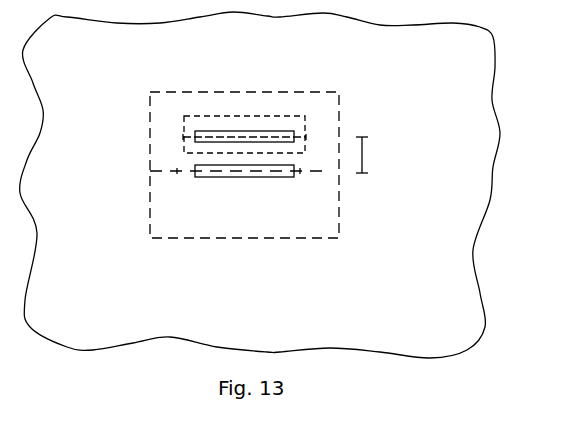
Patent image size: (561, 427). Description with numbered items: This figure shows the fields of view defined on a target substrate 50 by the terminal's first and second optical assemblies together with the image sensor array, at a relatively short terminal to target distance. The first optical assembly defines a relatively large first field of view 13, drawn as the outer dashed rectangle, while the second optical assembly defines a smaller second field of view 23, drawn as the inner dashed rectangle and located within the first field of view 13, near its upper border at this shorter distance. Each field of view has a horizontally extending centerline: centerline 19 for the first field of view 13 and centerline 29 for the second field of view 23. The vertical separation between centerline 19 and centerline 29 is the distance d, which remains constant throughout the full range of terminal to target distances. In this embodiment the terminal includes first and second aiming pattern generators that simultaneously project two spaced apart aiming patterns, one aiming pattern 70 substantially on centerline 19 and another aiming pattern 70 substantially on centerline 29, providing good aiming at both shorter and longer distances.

The first field of view 13 is at (317, 240).
The horizontally extending centerline 19 is at (322, 172).
The second field of view 23 is at (303, 153).
The horizontally extending centerline 29 is at (302, 140).
The target substrate 50 is at (452, 338).
The aiming pattern 70 is at (225, 130).
The distance d is at (363, 152).